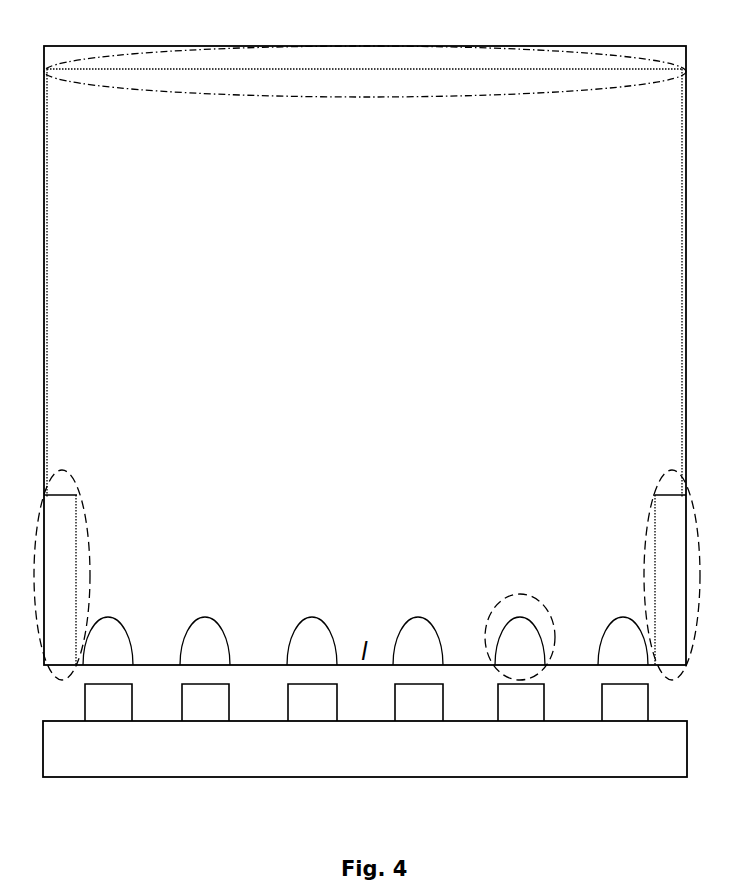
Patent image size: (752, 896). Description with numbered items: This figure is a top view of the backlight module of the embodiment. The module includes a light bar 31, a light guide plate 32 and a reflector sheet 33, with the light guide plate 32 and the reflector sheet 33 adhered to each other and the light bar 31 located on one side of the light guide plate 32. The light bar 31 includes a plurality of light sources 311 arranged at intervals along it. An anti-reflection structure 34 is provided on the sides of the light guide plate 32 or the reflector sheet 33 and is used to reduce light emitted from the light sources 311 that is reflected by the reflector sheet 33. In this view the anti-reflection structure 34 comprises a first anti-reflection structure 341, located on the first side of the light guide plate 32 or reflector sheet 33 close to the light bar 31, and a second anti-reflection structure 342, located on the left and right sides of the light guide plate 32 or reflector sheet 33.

The light bar 31 is at (449, 752).
The light sources 311 is at (626, 706).
The light guide plate 32 is at (641, 52).
The reflector sheet 33 is at (399, 78).
The anti-reflection structure 34 is at (592, 575).
The first anti-reflection structure 341 is at (314, 633).
The second anti-reflection structure 342 is at (217, 82).